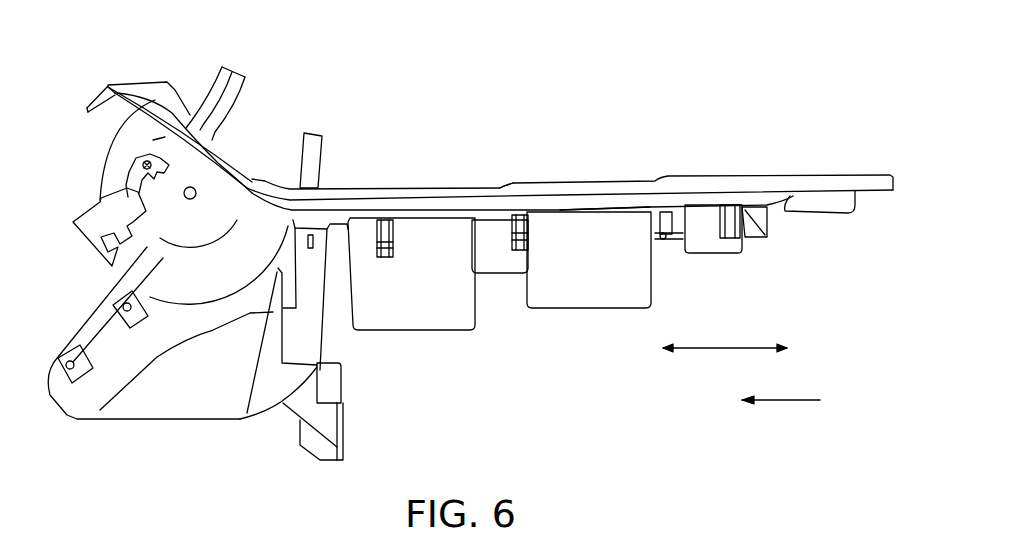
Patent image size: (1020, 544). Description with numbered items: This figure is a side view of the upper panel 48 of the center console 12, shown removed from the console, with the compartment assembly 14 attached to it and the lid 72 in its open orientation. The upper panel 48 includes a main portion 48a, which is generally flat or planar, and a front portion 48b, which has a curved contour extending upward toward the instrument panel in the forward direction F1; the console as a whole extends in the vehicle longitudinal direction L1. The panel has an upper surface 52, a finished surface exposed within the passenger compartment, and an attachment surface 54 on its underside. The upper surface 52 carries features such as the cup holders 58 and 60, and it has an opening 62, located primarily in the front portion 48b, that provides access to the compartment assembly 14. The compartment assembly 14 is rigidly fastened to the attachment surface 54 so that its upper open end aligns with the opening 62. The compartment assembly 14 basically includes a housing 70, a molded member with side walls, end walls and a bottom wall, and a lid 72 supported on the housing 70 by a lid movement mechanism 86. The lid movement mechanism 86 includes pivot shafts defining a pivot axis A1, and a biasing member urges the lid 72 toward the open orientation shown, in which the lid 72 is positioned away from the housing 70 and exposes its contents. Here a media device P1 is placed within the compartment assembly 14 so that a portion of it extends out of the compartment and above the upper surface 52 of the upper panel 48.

The center console 12 is at (86, 203).
The compartment assembly 14 is at (203, 418).
The upper panel 48 is at (573, 180).
The main portion 48a is at (620, 197).
The front portion 48b is at (134, 89).
The upper surface 52 is at (510, 185).
The attachment surface 54 is at (583, 214).
The cup holder 58 is at (412, 297).
The cup holder 60 is at (590, 282).
The opening 62 is at (228, 158).
The housing 70 is at (148, 393).
The lid 72 is at (244, 93).
The lid movement mechanism 86 is at (163, 210).
The media device P1 is at (322, 153).
The pivot axis A1 is at (197, 207).
The vehicle longitudinal direction L1 is at (730, 347).
The forward direction F1 is at (788, 402).